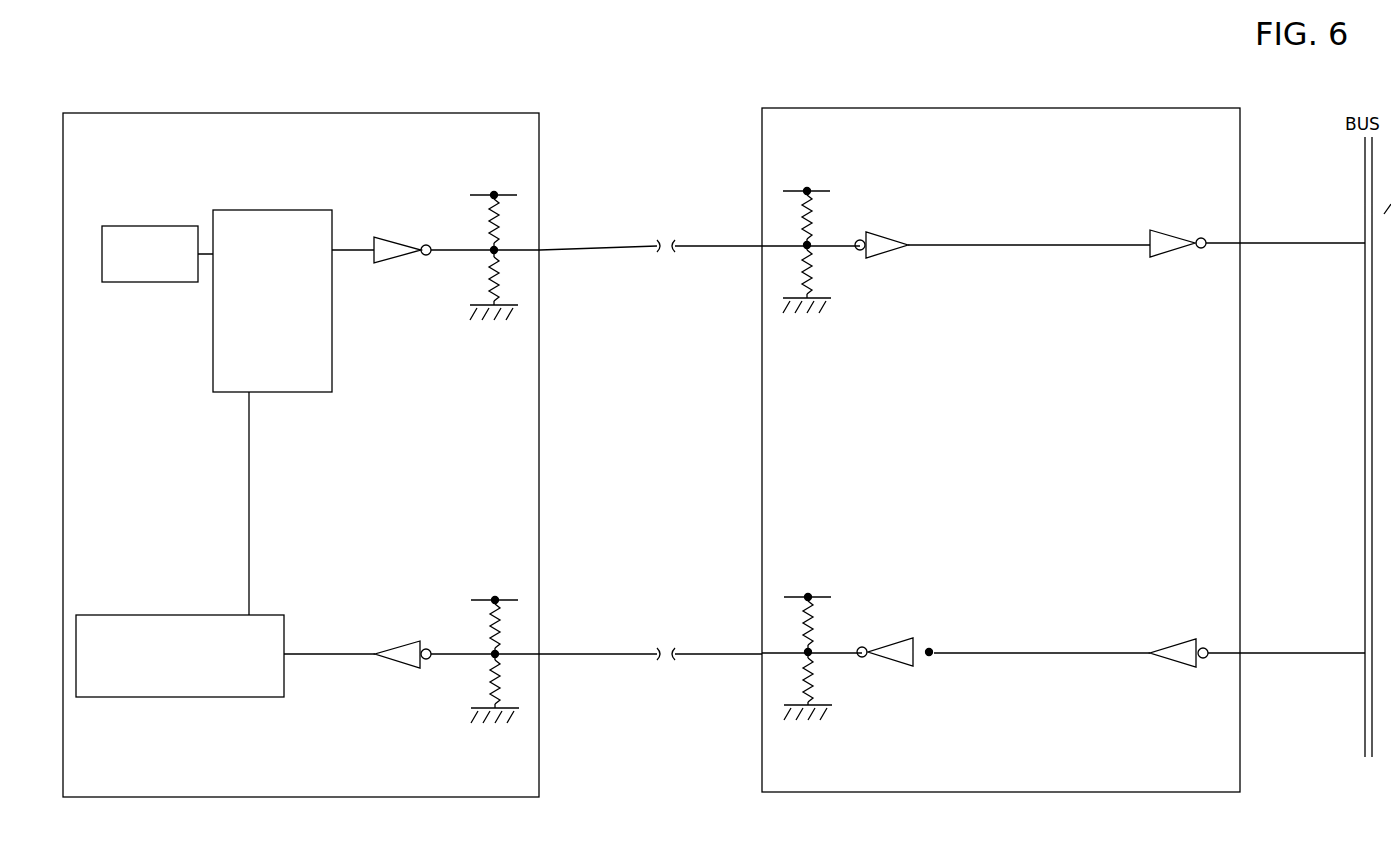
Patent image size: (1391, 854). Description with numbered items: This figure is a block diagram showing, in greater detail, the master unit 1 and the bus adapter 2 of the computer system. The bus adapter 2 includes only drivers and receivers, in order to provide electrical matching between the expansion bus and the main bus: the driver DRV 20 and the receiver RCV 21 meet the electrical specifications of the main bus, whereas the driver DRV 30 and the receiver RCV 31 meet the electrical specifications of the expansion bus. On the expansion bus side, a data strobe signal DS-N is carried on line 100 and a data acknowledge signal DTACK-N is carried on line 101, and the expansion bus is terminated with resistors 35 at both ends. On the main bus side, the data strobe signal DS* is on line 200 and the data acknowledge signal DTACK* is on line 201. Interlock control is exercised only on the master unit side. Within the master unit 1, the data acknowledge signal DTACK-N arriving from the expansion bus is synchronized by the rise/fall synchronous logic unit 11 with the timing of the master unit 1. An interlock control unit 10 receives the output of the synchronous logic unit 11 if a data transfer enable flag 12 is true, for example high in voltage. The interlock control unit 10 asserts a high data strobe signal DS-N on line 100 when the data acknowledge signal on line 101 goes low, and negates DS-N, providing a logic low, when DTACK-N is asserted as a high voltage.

The master unit 1 is at (411, 113).
The bus adapter 2 is at (1128, 108).
The interlock control unit 10 is at (223, 392).
The synchronous logic unit 11 is at (166, 697).
The data transfer enable flag 12 is at (160, 222).
The driver DRV 20 is at (1182, 230).
The receiver RCV 21 is at (1180, 638).
The driver DRV 30 is at (390, 237).
The receiver RCV 31 is at (897, 230).
The resistors 35 is at (502, 195).
The line 100 is at (608, 252).
The line 101 is at (629, 663).
The line 200 is at (1298, 253).
The line 201 is at (1296, 665).